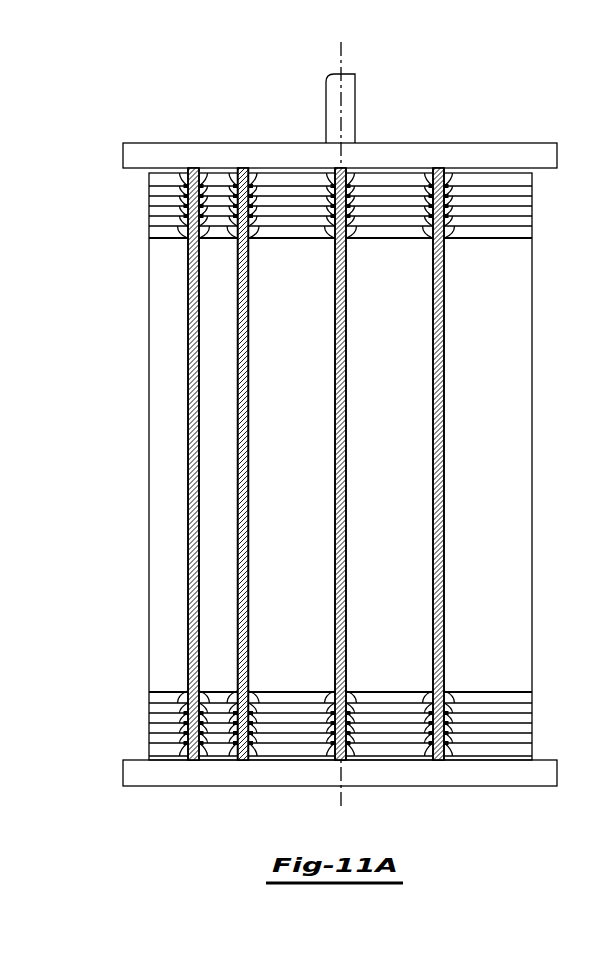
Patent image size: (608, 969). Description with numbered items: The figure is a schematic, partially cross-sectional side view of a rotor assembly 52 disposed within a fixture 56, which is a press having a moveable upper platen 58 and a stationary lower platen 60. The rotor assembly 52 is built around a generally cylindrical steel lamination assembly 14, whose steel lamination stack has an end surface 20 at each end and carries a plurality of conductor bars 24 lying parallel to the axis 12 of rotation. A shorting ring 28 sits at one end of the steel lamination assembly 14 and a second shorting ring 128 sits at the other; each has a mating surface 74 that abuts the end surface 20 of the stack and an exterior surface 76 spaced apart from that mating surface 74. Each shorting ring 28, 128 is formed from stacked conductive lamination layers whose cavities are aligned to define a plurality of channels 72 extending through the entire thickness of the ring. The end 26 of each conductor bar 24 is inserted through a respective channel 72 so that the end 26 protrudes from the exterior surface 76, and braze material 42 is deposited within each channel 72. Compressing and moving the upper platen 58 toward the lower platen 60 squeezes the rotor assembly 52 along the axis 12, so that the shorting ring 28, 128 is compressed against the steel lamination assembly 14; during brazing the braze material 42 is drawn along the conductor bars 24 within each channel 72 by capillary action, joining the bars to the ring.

The axis of rotation 12 is at (341, 53).
The steel lamination assembly 14 is at (545, 240).
The end surface 20 is at (503, 238).
The conductor bar 24 is at (249, 463).
The end 26 is at (438, 168).
The shorting ring 28 is at (545, 175).
The braze material 42 is at (182, 185).
The rotor assembly 52 is at (90, 428).
The fixture 56 is at (355, 110).
The upper platen 58 is at (526, 152).
The lower platen 60 is at (233, 787).
The channel 72 is at (240, 165).
The mating surface 74 is at (399, 236).
The exterior surface 76 is at (289, 152).
The shorting ring 128 is at (545, 694).